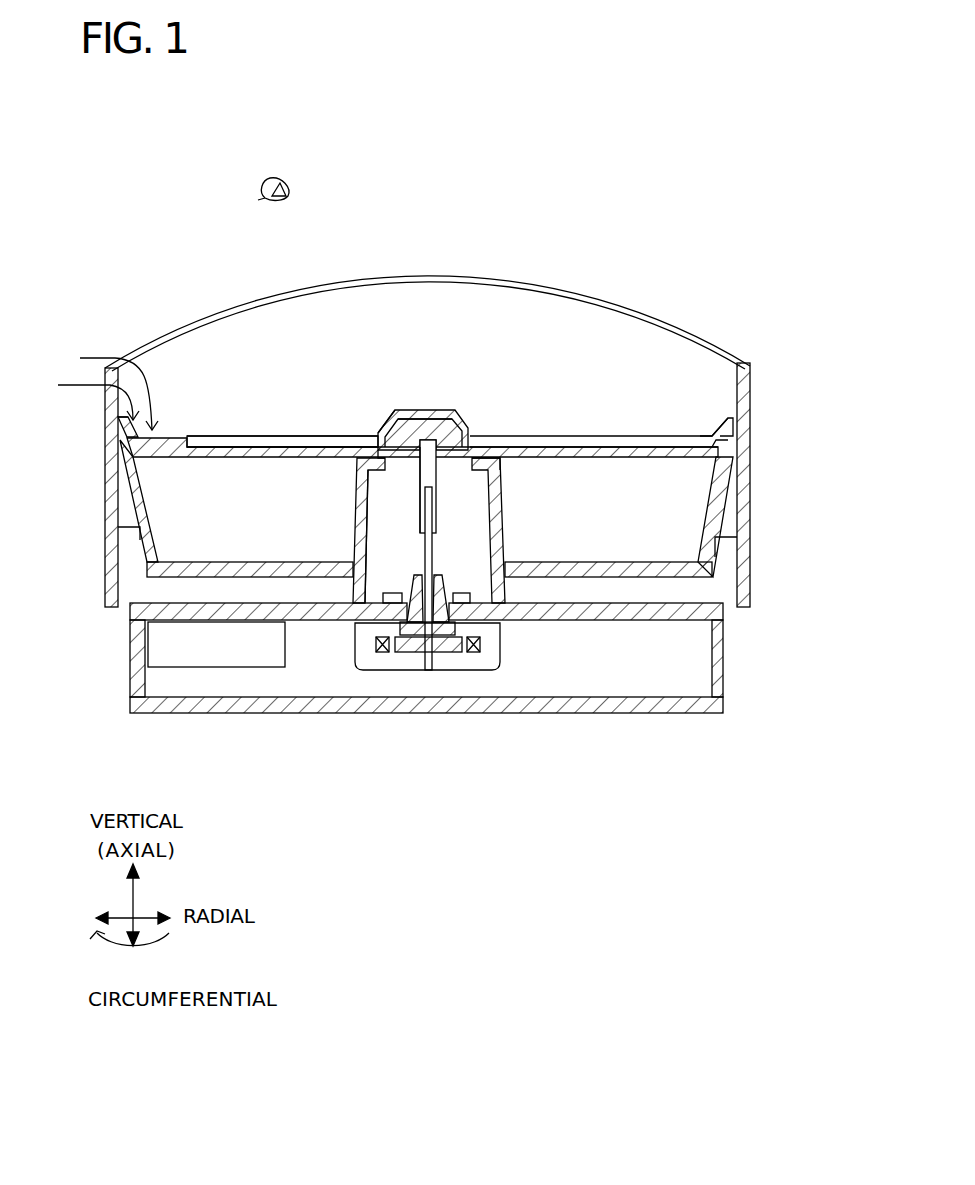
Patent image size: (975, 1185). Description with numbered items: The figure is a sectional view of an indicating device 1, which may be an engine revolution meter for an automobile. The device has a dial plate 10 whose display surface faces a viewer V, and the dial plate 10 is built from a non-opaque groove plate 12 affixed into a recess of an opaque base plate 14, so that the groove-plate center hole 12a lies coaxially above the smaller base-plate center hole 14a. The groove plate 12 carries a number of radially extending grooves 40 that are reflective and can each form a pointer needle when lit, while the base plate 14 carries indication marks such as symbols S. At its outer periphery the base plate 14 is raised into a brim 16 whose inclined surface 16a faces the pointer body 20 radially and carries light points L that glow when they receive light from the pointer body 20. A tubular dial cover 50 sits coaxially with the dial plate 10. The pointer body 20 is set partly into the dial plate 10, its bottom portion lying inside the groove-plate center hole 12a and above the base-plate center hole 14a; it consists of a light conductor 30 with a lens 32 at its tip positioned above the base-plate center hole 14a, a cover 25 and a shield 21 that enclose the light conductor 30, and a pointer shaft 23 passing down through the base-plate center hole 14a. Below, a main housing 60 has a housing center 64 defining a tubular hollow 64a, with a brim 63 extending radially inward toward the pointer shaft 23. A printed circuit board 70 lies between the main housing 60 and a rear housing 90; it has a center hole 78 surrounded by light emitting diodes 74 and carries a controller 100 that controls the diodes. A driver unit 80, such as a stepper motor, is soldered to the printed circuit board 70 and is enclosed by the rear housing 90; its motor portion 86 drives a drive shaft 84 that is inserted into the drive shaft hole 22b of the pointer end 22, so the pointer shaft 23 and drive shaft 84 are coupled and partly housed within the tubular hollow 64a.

The indicating device 1 is at (763, 291).
The dial plate 10 is at (713, 427).
The groove plate 12 is at (417, 386).
The groove-plate center hole 12a is at (477, 430).
The base plate 14 is at (403, 495).
The base-plate center hole 14a is at (490, 434).
The brim 16 is at (84, 417).
The inclined surface 16a is at (124, 416).
The pointer body 20 is at (435, 507).
The shield 21 is at (400, 452).
The pointer end 22 is at (457, 555).
The drive shaft hole 22b is at (435, 503).
The pointer shaft 23 is at (420, 485).
The cover 25 is at (405, 410).
The light conductor 30 is at (437, 425).
The lens 32 is at (390, 413).
The grooves 40 is at (292, 445).
The dial cover 50 is at (753, 372).
The main housing 60 is at (538, 555).
The brim 63 is at (499, 470).
The housing center 64 is at (418, 530).
The tubular hollow 64a is at (383, 550).
The printed circuit board 70 is at (700, 625).
The light emitting diodes 74 is at (390, 595).
The center hole 78 is at (498, 627).
The driver unit 80 is at (437, 678).
The drive shaft 84 is at (380, 652).
The motor portion 86 is at (447, 656).
The rear housing 90 is at (708, 720).
The controller 100 is at (177, 667).
The symbols S is at (110, 389).
The light points L is at (90, 398).
The viewer V is at (288, 180).